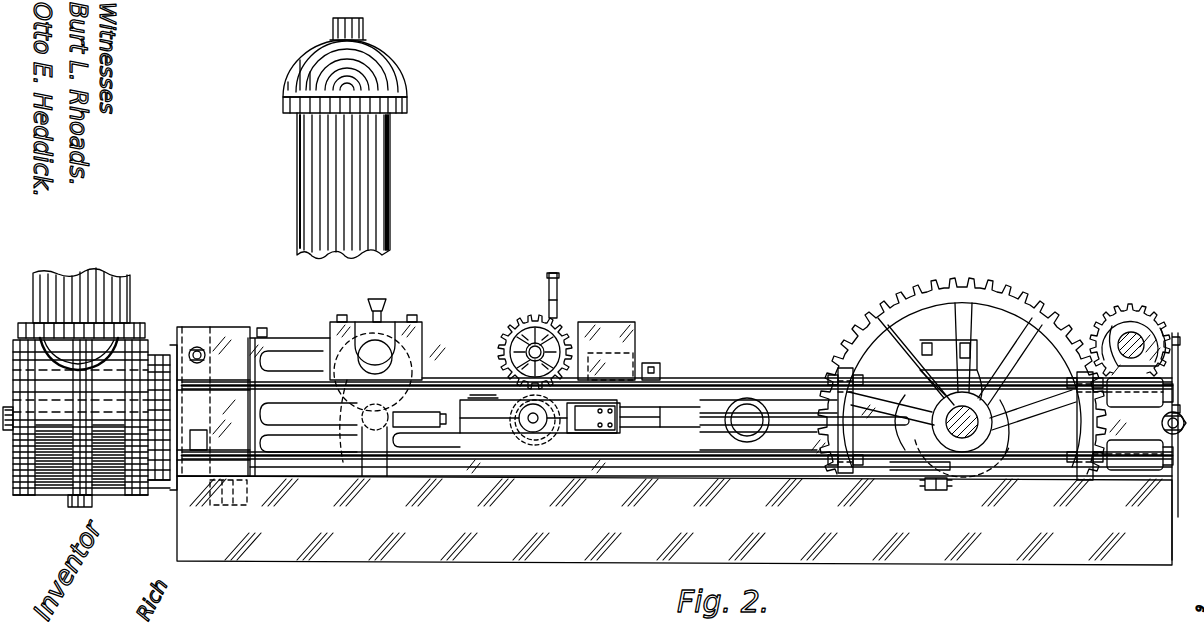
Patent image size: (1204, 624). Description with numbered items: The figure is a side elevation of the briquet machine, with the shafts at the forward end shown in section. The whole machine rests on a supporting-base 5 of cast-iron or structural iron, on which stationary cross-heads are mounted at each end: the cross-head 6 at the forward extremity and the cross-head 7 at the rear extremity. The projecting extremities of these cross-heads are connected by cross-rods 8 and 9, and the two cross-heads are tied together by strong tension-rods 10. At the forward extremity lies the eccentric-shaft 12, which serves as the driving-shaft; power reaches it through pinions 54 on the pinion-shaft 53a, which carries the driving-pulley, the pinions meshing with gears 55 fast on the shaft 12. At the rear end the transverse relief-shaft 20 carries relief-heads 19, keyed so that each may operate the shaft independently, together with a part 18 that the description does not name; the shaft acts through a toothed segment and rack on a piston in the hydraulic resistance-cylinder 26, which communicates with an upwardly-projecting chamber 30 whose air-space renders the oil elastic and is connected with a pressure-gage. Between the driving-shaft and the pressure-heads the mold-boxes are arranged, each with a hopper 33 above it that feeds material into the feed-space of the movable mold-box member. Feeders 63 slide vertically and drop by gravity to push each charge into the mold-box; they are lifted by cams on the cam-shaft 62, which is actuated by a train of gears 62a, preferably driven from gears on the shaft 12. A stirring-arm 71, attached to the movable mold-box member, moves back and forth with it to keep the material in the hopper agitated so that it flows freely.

The supporting-base 5 is at (674, 520).
The cross-head 6 is at (1122, 472).
The cross-head 7 is at (240, 325).
The cross-rod 8 is at (1170, 440).
The cross-rod 9 is at (197, 345).
The tension-rods 10 is at (747, 380).
The eccentric-shaft 12 is at (965, 468).
The housing 18 is at (290, 338).
The relief-heads 19 is at (422, 353).
The relief-shaft 20 is at (381, 350).
The hydraulic resistance-cylinder 26 is at (149, 498).
The chamber 30 is at (212, 262).
The hopper 33 is at (608, 338).
The pinion-shaft 53a is at (1113, 328).
The pinions 54 is at (1135, 310).
The gears 55 is at (953, 293).
The cam-shaft 62 is at (512, 337).
The train of gears 62a is at (500, 348).
The feeders 63 is at (559, 290).
The agitating or stirring-arm 71 is at (648, 366).